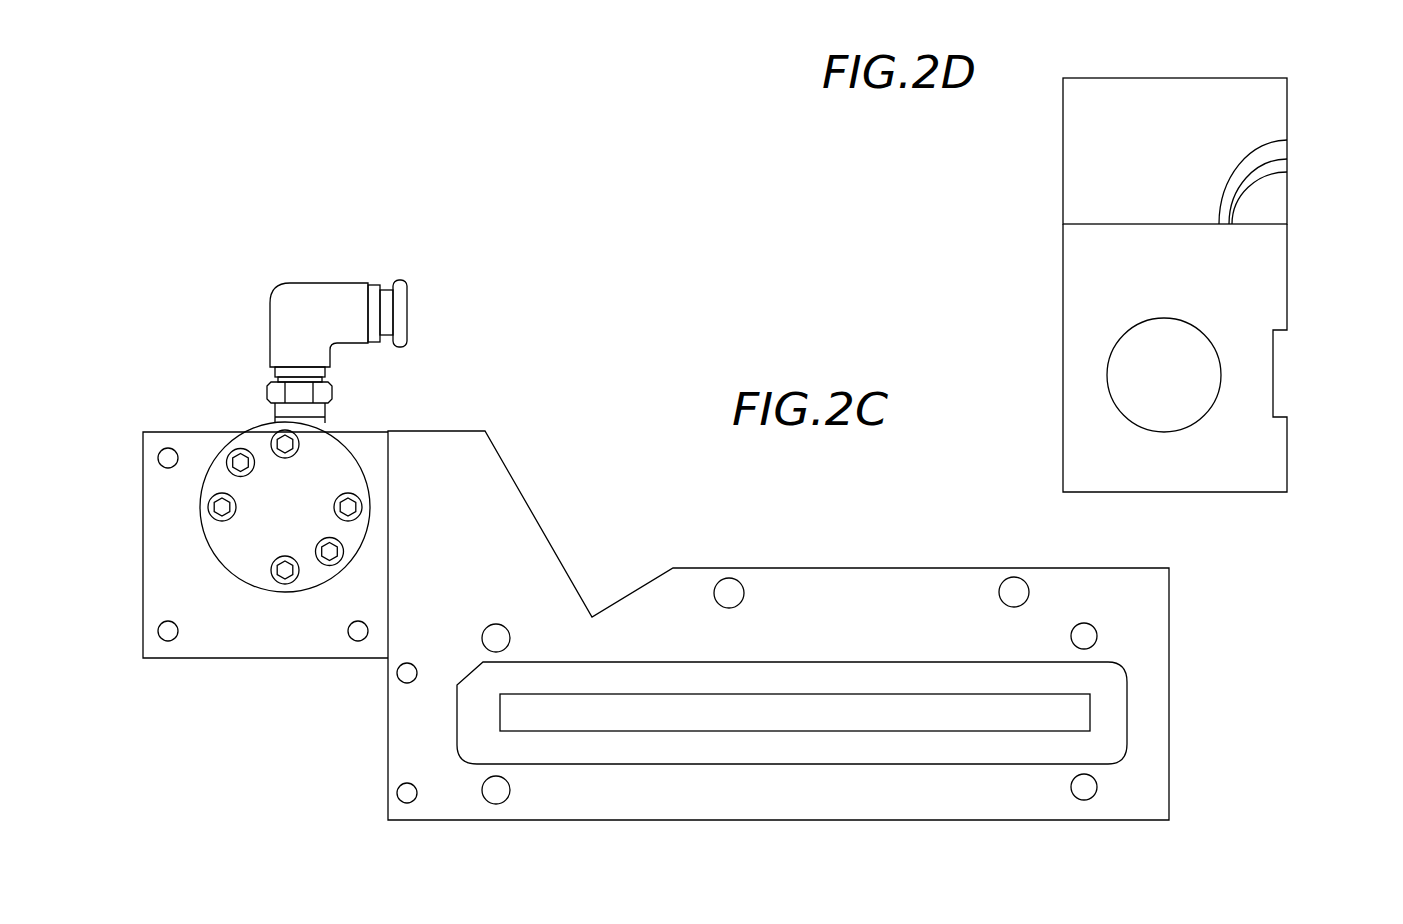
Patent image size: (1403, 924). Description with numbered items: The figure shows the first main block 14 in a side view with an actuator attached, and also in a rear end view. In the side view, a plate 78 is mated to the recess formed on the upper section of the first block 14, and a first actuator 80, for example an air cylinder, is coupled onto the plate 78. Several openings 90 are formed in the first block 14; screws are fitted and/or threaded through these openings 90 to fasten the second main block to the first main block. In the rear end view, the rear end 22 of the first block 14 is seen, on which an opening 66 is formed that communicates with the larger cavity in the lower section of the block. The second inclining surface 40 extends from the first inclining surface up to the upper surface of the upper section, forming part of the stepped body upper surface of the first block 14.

In FIG. 2C, the first block 14 is at (1172, 663).
In FIG. 2D, the first block 14 is at (1288, 479).
In FIG. 2C, the rear end 22 is at (1170, 745).
In FIG. 2D, the rear end 22 is at (1138, 272).
In FIG. 2D, the second inclining surface 40 is at (1133, 155).
In FIG. 2D, the opening 66 is at (1146, 337).
In FIG. 2C, the plate 78 is at (261, 635).
In FIG. 2C, the first actuator 80 is at (277, 473).
In FIG. 2C, the openings 90 is at (733, 586).